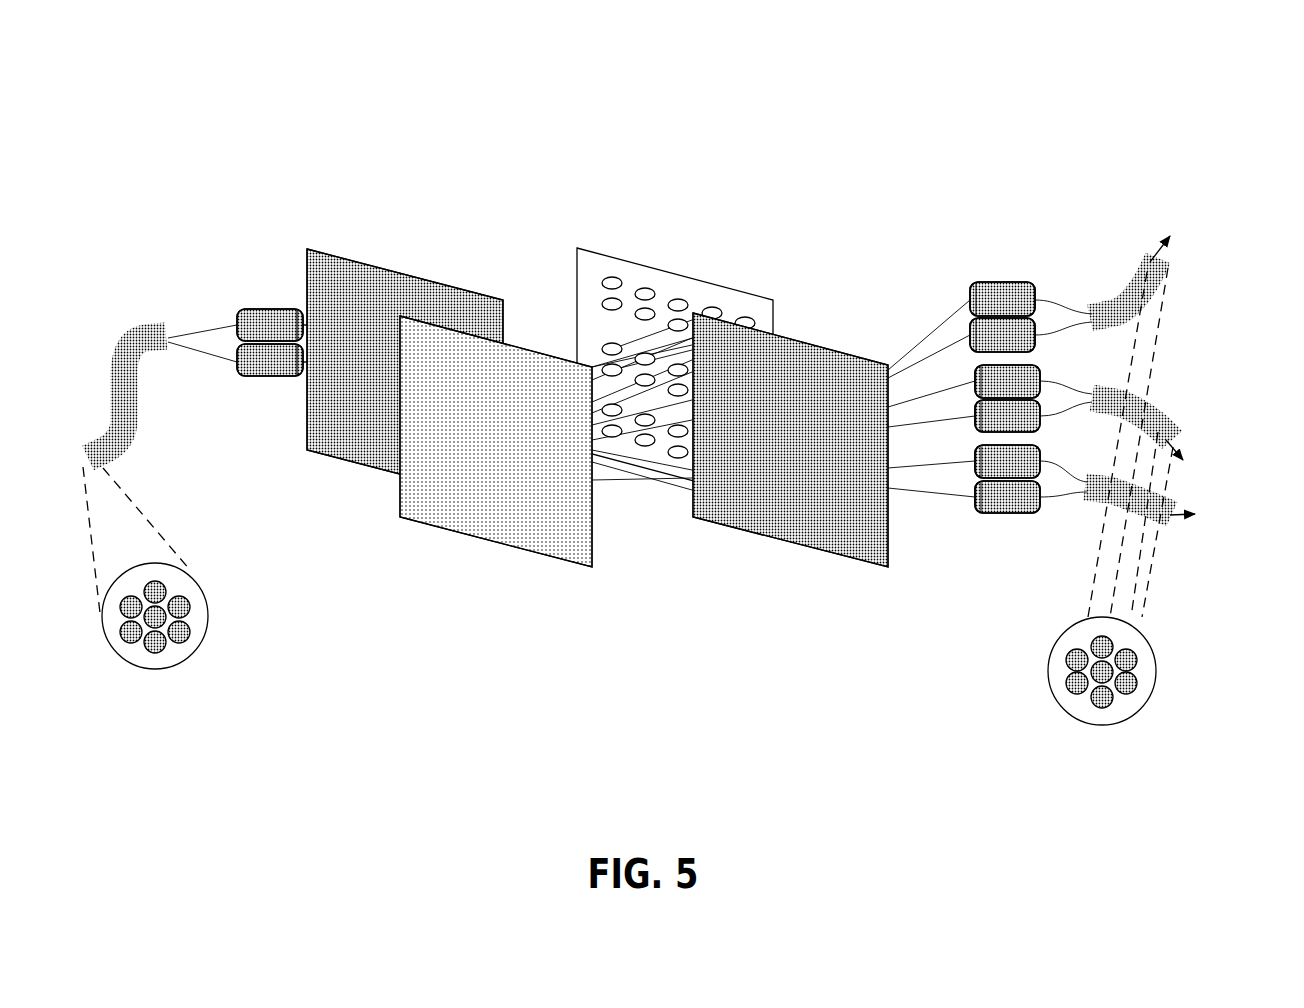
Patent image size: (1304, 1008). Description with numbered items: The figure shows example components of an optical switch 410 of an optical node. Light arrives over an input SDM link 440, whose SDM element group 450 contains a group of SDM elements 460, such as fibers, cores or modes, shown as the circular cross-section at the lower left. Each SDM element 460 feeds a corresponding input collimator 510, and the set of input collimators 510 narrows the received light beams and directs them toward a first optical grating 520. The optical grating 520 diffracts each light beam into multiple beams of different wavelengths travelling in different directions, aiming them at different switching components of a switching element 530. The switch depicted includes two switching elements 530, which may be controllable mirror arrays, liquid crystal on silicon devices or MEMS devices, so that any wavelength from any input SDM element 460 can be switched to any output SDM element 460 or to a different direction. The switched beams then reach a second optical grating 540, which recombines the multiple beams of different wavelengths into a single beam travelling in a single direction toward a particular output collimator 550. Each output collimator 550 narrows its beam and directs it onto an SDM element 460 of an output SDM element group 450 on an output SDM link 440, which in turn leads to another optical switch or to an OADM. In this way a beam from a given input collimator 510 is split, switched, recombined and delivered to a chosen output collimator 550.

The optical switch 410 is at (176, 62).
The SDM link 440 is at (140, 322).
The SDM element group 450 is at (148, 670).
The SDM element 460 is at (194, 612).
The input collimator 510 is at (268, 286).
The optical grating 520 is at (405, 333).
The switching element 530 is at (586, 408).
The optical grating 540 is at (790, 481).
The output collimator 550 is at (1007, 455).